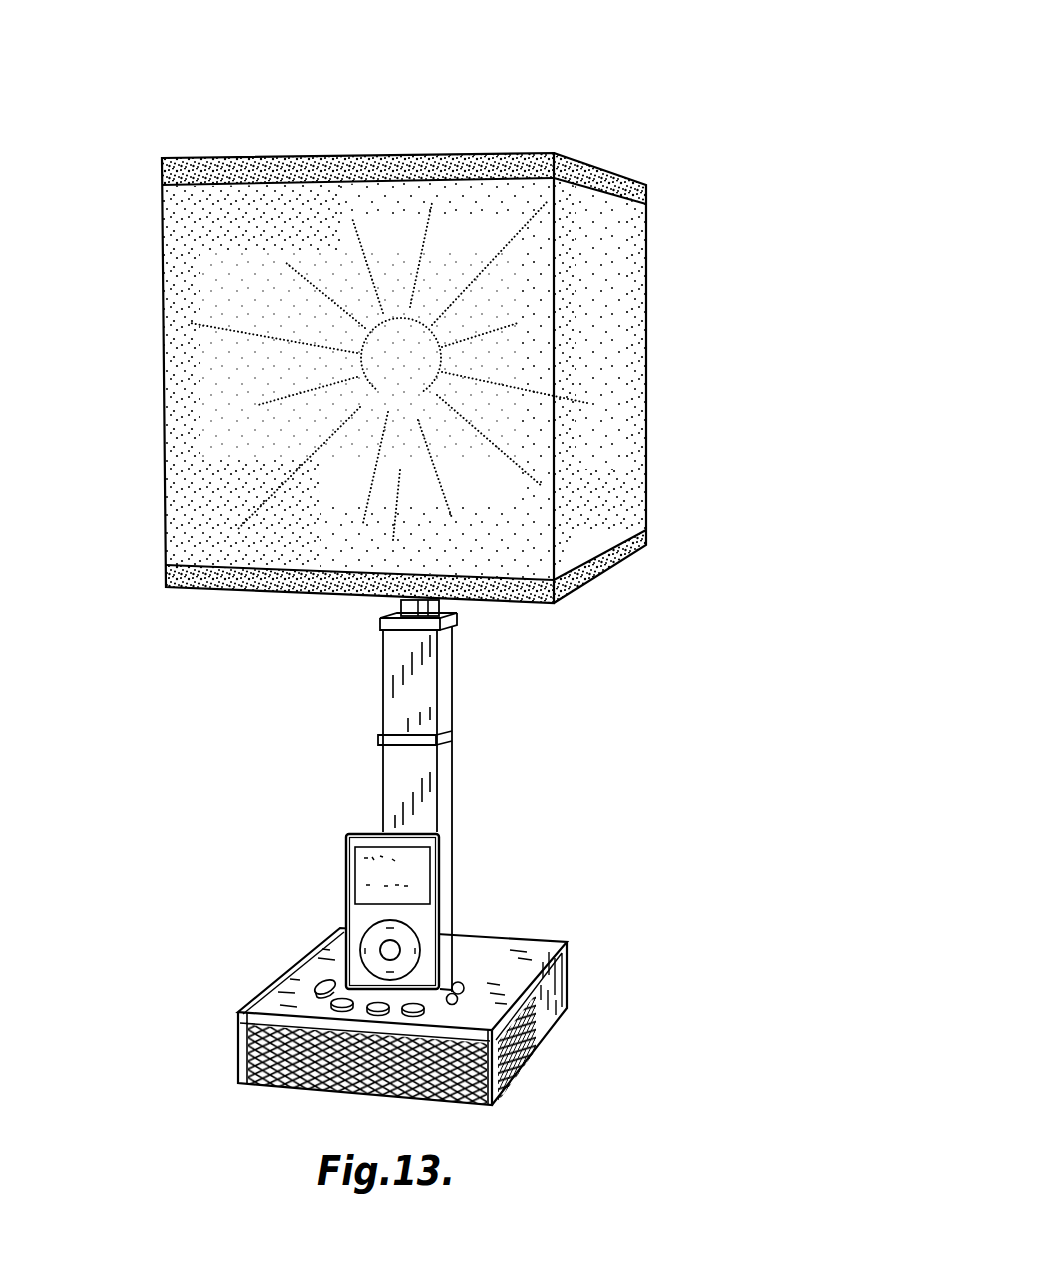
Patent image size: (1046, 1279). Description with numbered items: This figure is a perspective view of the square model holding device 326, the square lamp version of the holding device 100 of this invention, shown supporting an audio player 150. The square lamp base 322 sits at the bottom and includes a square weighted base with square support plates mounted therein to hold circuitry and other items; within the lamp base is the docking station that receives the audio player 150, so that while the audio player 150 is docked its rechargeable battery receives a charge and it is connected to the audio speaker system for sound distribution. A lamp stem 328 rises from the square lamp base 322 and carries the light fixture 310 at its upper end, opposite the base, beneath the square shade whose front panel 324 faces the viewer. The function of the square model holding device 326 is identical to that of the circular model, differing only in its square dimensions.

The holding device 100 is at (676, 203).
The square model holding device 326 is at (427, 323).
The shade front panel 324 is at (163, 360).
The light fixture 310 is at (370, 342).
The stem post 328 is at (452, 763).
The square lamp base 322 is at (572, 972).
The audio player 150 is at (345, 868).